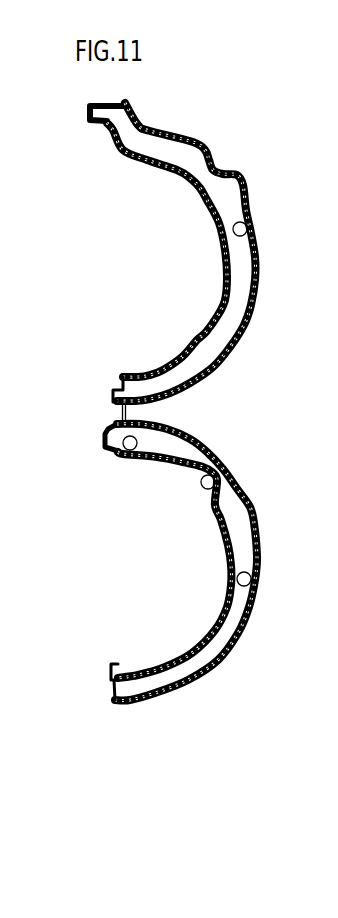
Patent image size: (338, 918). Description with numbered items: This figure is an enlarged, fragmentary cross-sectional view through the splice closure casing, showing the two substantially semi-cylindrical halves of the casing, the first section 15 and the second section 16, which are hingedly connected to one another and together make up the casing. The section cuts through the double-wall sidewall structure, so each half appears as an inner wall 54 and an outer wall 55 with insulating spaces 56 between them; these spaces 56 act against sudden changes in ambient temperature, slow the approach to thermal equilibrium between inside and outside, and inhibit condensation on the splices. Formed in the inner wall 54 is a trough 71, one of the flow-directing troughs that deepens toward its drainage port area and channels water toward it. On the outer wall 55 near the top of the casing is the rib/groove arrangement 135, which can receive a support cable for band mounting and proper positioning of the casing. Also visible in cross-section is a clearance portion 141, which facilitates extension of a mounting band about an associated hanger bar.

The first casing section 15 is at (143, 128).
The second casing section 16 is at (232, 645).
The inner wall 54 is at (210, 314).
The outer wall 55 is at (259, 283).
The insulating space 56 is at (250, 216).
The trough 71 is at (219, 481).
The rib/groove arrangement 135 is at (221, 156).
The clearance portion 141 is at (194, 188).